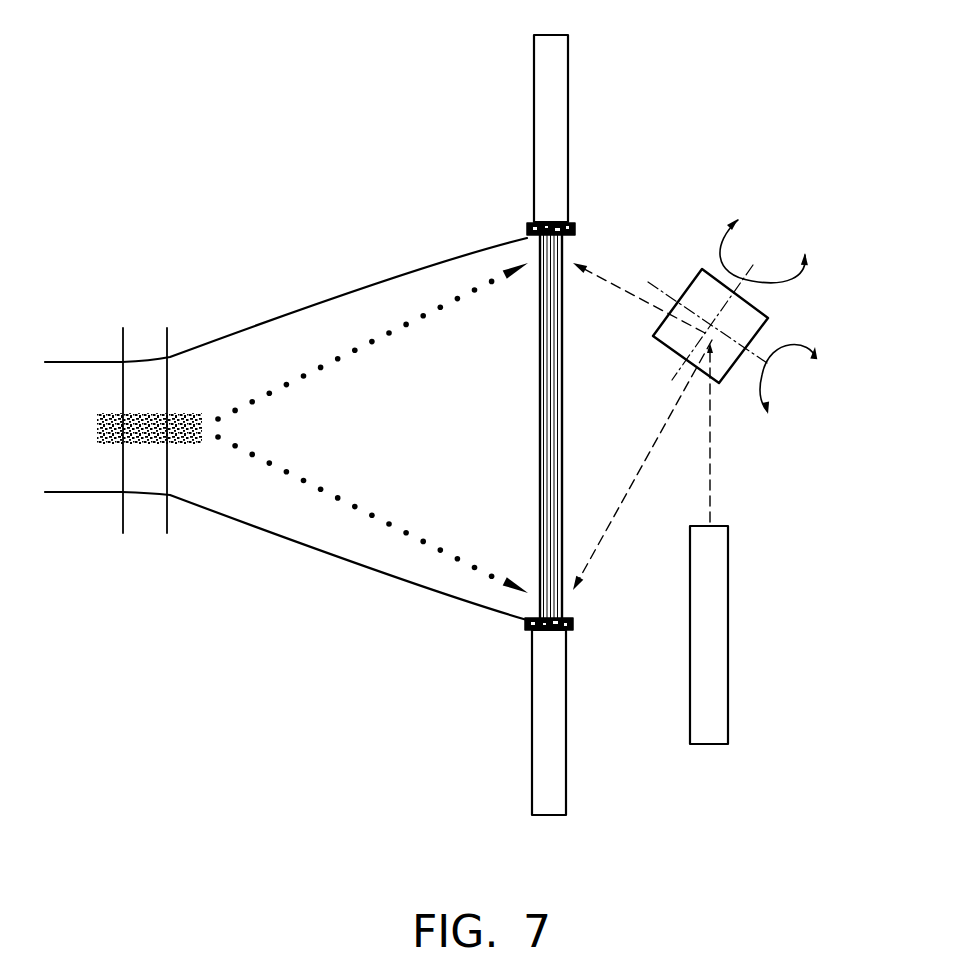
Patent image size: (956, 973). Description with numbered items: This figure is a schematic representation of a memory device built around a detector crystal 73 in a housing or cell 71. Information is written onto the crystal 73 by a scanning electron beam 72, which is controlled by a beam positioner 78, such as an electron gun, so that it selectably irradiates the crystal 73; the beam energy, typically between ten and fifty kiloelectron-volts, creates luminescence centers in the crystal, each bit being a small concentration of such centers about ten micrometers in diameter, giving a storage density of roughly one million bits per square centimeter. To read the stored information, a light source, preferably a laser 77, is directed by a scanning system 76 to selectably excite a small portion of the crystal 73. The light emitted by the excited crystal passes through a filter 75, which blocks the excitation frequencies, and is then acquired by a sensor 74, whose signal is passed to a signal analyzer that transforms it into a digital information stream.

The tube / flow cell 71 is at (237, 333).
The scanning electron beam 72 is at (355, 508).
The detector crystal 73 is at (537, 523).
The sensor 74 is at (570, 98).
The filter 75 is at (553, 223).
The scanning system 76 is at (683, 291).
The laser 77 is at (728, 655).
The beam positioner 78 is at (99, 443).